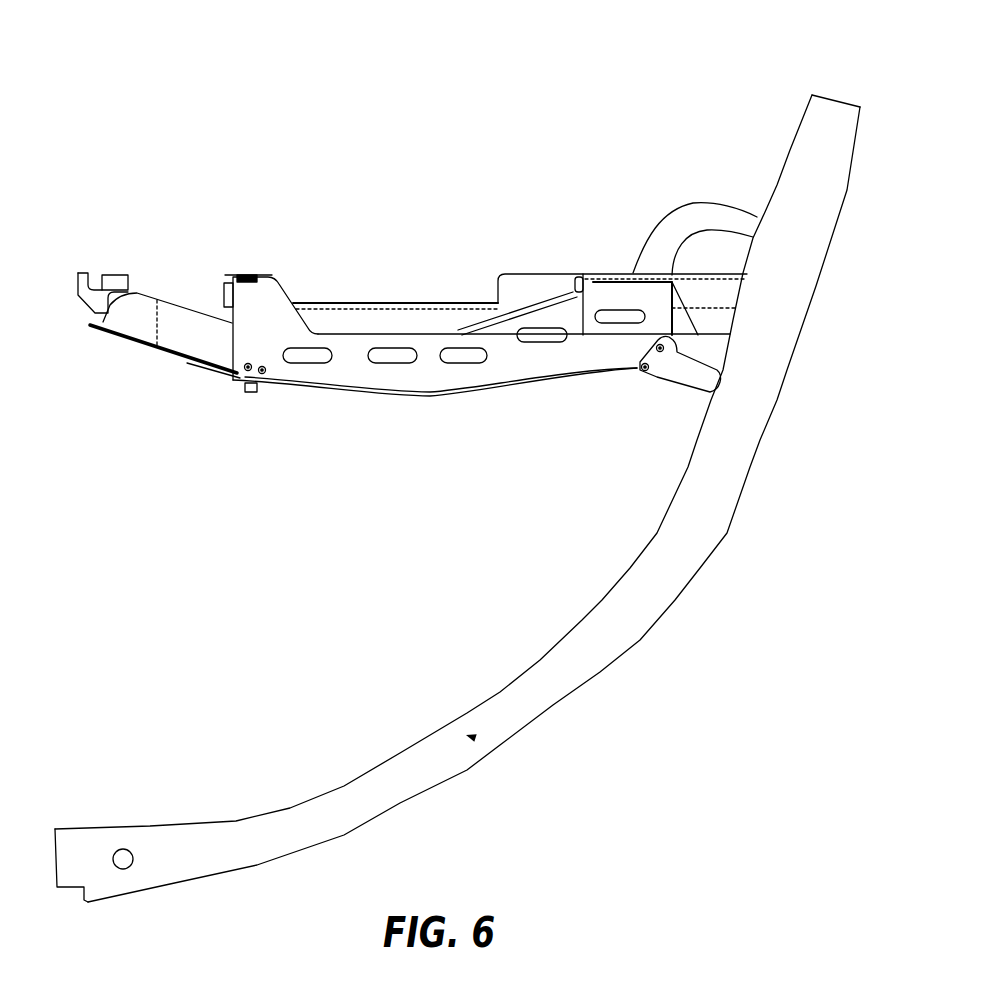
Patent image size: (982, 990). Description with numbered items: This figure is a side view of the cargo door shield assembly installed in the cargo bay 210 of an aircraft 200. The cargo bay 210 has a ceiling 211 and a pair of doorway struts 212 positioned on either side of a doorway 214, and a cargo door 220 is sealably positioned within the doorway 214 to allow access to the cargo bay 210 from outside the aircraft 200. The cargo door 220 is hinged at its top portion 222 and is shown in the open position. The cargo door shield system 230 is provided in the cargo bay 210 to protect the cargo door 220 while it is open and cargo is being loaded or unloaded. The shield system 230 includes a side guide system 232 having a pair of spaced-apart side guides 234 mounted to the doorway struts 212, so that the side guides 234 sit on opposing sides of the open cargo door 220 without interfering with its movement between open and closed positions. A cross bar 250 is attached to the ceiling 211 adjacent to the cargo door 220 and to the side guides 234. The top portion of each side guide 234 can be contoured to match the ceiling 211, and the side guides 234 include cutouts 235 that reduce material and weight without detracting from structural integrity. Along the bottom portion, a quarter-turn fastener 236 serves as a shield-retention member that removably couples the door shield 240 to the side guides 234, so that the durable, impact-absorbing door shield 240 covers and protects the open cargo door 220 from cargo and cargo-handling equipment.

The aircraft 200 is at (127, 53).
The cargo bay 210 is at (192, 596).
The ceiling 211 is at (723, 377).
The doorway struts 212 is at (568, 652).
The doorway 214 is at (483, 737).
The cargo door 220 is at (182, 333).
The top portion 222 is at (695, 218).
The cargo door shield system 230 is at (133, 220).
The side guide system 232 is at (88, 246).
The side guides 234 is at (265, 337).
The cutouts 235 is at (570, 377).
The quarter-turn fastener 236 is at (245, 372).
The door shield 240 is at (187, 367).
The cross bar 250 is at (262, 290).